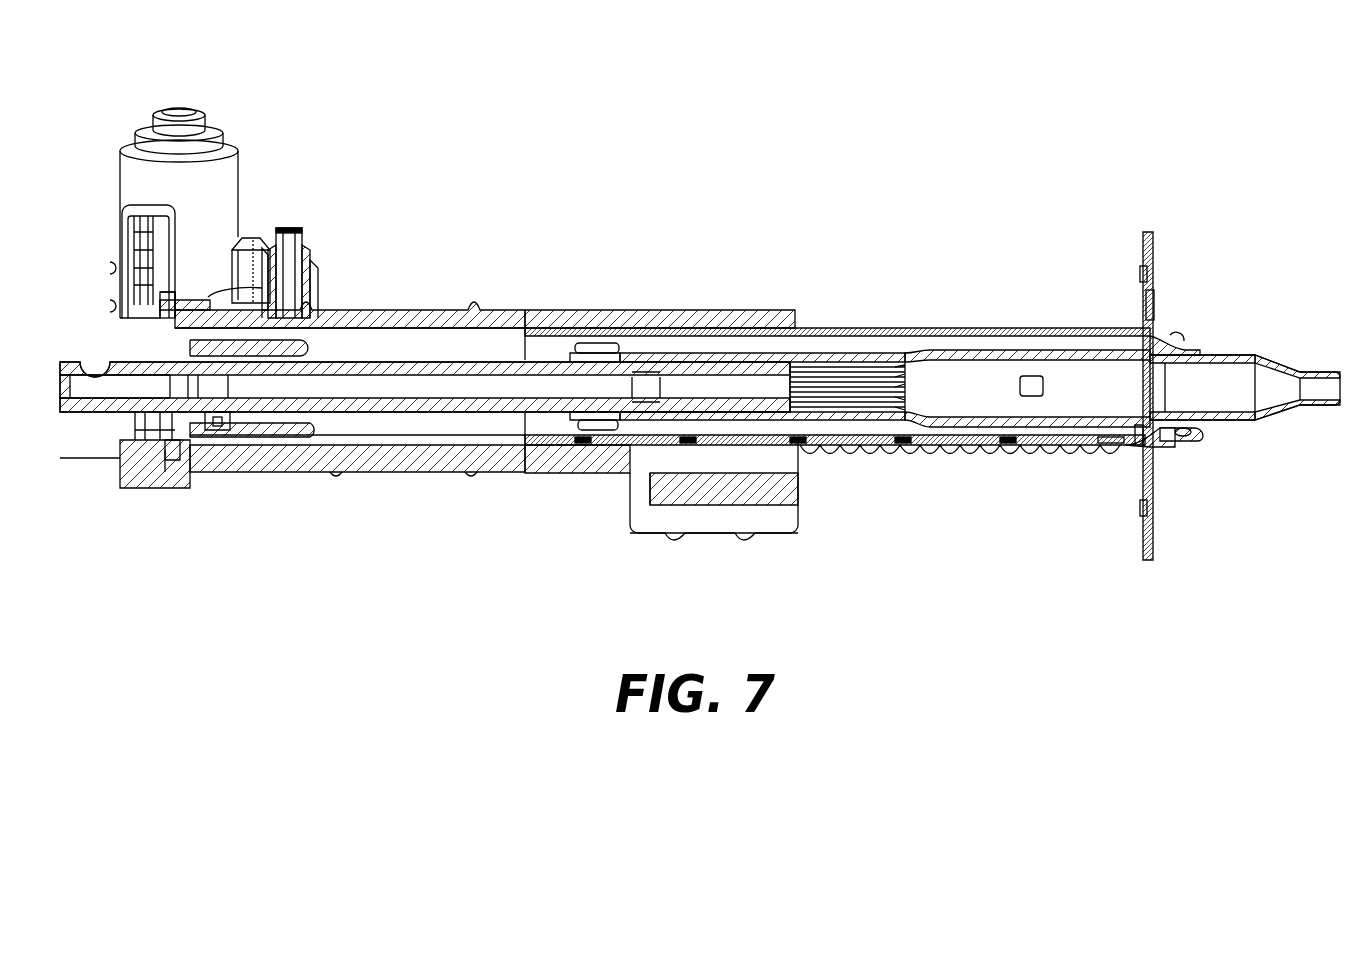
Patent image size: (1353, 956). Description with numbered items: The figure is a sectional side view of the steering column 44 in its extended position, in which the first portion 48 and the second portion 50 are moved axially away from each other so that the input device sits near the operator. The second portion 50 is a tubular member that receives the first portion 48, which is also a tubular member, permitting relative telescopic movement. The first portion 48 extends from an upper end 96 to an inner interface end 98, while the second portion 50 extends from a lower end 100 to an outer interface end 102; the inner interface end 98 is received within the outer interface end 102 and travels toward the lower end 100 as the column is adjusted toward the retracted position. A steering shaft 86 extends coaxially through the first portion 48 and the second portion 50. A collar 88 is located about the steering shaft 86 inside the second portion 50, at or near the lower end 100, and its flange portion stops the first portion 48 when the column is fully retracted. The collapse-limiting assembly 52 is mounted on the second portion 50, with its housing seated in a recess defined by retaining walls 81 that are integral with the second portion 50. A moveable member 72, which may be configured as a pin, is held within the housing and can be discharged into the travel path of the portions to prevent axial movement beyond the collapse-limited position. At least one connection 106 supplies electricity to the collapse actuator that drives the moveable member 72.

The steering column 44 is at (1200, 75).
The first portion 48 is at (852, 318).
The second portion 50 is at (628, 302).
The collapse-limiting assembly 52 is at (304, 257).
The moveable member 72 is at (312, 308).
The retaining walls 81 is at (245, 303).
The steering shaft 86 is at (1222, 352).
The collar 88 is at (163, 455).
The upper end 96 is at (1196, 340).
The inner interface end 98 is at (527, 318).
The lower end 100 is at (160, 300).
The outer interface end 102 is at (796, 310).
The connection 106 is at (290, 228).